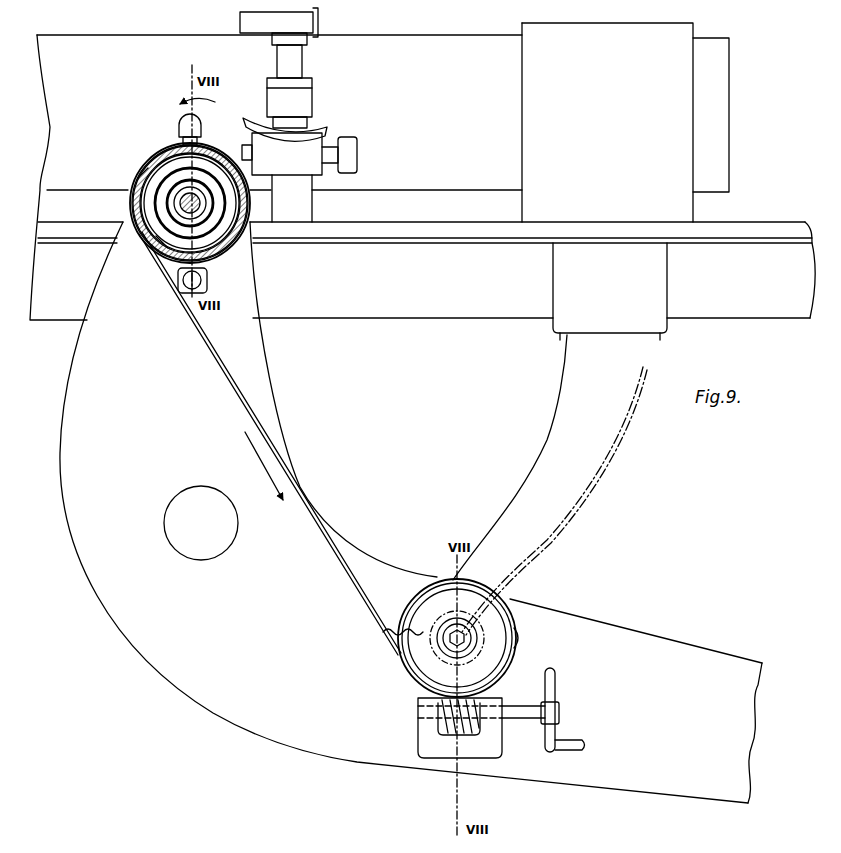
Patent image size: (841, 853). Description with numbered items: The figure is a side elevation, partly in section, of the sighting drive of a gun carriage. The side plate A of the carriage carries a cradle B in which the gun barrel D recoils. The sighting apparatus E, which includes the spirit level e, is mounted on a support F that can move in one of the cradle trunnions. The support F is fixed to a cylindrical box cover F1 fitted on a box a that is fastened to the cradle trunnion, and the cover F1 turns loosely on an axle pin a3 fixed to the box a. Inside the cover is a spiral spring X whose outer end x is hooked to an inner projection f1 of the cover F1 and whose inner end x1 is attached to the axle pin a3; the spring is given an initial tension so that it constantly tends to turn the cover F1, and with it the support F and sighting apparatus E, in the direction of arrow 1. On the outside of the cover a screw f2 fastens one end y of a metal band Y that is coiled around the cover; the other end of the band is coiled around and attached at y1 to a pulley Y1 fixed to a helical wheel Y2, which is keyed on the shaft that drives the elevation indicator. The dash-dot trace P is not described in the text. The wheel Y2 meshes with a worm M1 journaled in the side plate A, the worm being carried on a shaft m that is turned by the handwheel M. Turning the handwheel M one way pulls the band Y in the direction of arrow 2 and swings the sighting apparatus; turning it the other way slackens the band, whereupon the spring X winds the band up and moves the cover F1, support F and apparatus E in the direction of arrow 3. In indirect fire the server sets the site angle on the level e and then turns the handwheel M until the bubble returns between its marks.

The gun barrel D is at (62, 125).
The cradle B is at (483, 313).
The side plate A is at (225, 705).
The sighting apparatus E is at (306, 95).
The spirit level e is at (310, 120).
The screw f2 is at (205, 136).
The support F is at (265, 212).
The axle pin a3 is at (200, 203).
The spiral spring X is at (215, 240).
The box a is at (130, 185).
The arrow 1 is at (155, 150).
The inner end of spiral spring x1 is at (180, 218).
The box cover F1 is at (146, 165).
The end of metal band y is at (176, 142).
The inner projection f1 is at (152, 242).
The outer end of spiral spring x is at (178, 270).
The arrow 3 is at (262, 236).
The arrow 2 is at (248, 468).
The metal band Y is at (220, 370).
The path of belt (dash-dot) P is at (603, 441).
The pulley Y1 is at (500, 610).
The attachment point of band on pulley y1 is at (520, 637).
The helical wheel Y2 is at (420, 690).
The worm M1 is at (440, 718).
The shaft of worm m is at (524, 712).
The handwheel M is at (551, 736).